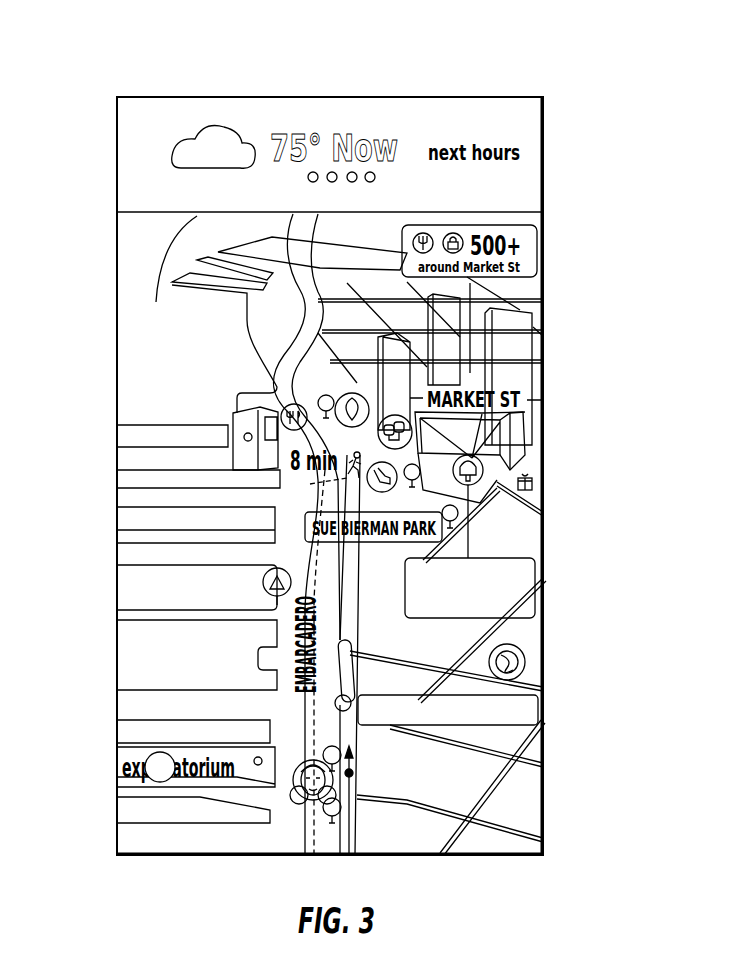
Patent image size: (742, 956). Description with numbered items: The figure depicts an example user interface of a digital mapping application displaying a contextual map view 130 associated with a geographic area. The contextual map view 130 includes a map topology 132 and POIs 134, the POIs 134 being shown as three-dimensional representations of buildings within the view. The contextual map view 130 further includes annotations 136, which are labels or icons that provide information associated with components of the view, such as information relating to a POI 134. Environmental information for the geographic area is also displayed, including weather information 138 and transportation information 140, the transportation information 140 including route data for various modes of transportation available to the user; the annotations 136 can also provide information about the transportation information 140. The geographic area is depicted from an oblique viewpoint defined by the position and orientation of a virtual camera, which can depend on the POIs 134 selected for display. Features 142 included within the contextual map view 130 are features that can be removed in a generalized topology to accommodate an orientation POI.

The contextual map view 130 is at (588, 206).
The map topology 132 is at (483, 765).
The POI 134 is at (517, 442).
The annotation 136 is at (480, 482).
The weather information 138 is at (205, 148).
The transportation information 140 is at (343, 700).
The features 142 is at (158, 257).